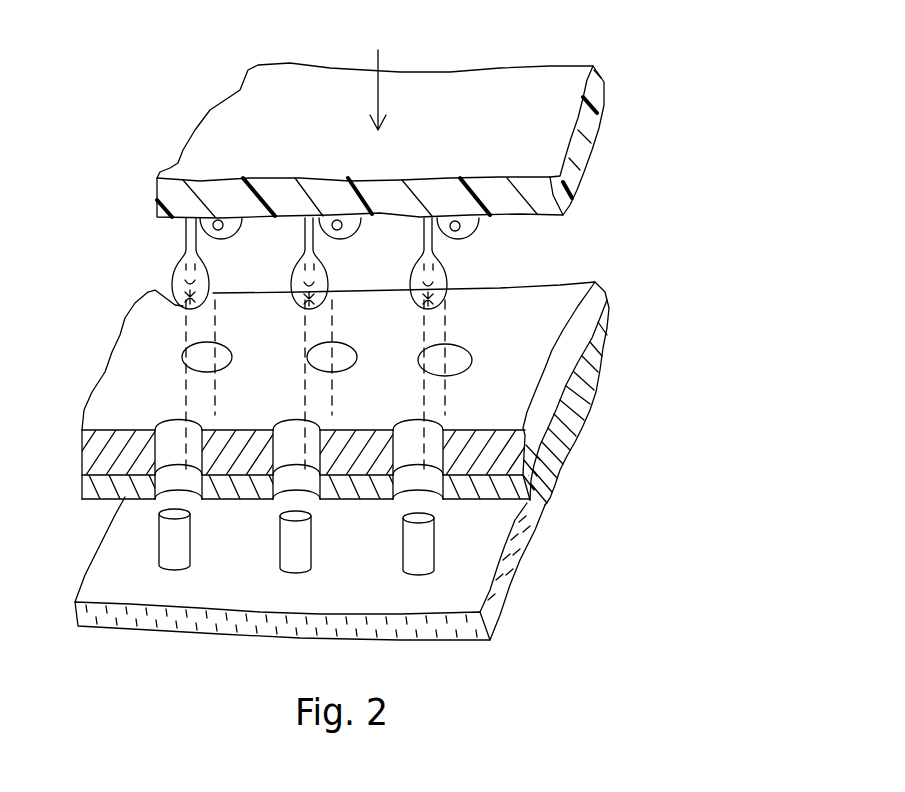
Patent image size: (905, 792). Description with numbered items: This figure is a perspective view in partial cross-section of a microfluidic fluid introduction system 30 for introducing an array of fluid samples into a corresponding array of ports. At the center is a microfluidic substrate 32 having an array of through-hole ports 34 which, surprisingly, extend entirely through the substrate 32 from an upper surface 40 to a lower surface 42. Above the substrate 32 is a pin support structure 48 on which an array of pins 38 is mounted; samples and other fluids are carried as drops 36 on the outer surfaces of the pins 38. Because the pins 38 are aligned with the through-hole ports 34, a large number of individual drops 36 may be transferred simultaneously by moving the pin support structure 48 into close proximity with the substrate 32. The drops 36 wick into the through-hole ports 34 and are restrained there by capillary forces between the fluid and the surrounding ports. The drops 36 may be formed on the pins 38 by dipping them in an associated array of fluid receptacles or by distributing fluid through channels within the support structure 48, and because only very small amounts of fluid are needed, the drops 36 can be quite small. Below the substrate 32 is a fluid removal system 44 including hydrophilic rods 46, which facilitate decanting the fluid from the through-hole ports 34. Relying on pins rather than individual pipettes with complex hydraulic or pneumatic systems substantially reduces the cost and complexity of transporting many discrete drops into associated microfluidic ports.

The microfluidic fluid introduction system 30 is at (727, 96).
The microfluidic substrate 32 is at (573, 280).
The through-hole ports 34 is at (207, 371).
The drops 36 is at (178, 304).
The pins 38 is at (192, 233).
The upper surface 40 is at (546, 336).
The lower surface 42 is at (498, 513).
The fluid removal system 44 is at (80, 583).
The rods 46 is at (165, 547).
The pin support structure 48 is at (470, 68).